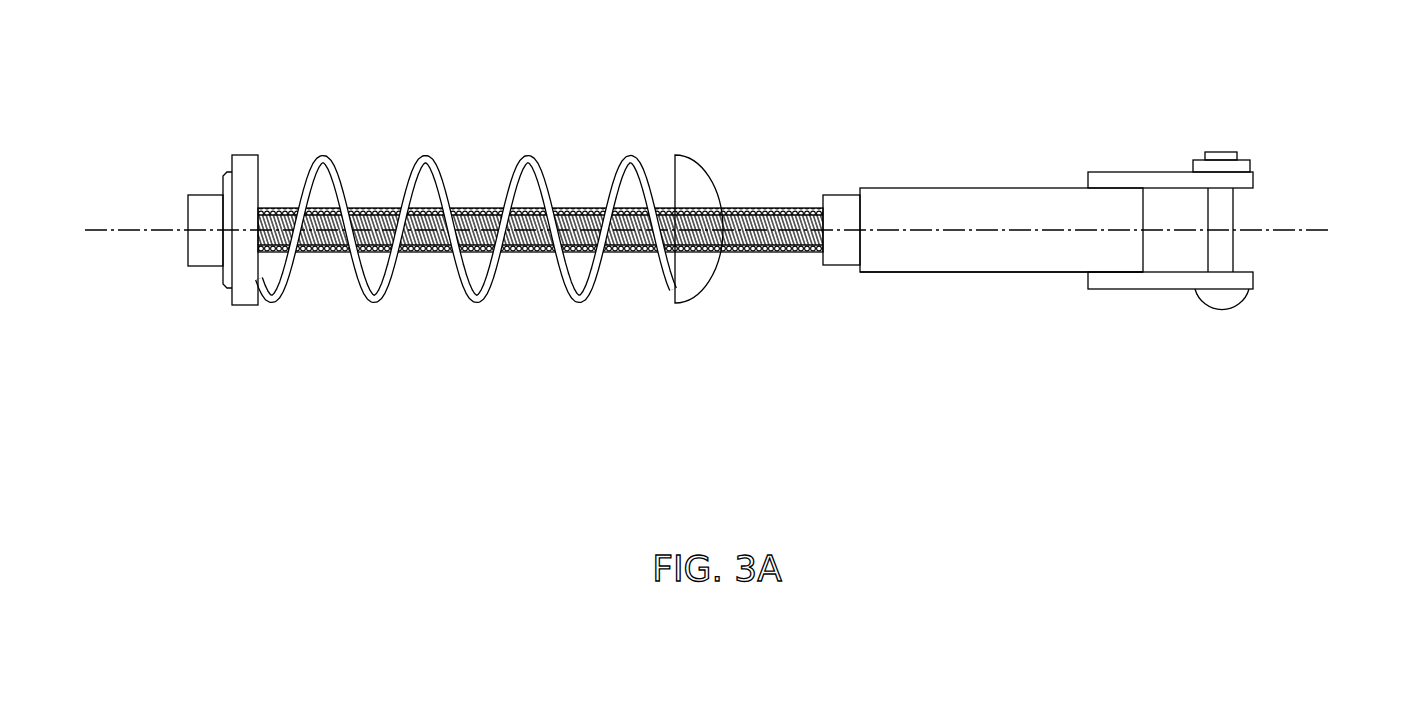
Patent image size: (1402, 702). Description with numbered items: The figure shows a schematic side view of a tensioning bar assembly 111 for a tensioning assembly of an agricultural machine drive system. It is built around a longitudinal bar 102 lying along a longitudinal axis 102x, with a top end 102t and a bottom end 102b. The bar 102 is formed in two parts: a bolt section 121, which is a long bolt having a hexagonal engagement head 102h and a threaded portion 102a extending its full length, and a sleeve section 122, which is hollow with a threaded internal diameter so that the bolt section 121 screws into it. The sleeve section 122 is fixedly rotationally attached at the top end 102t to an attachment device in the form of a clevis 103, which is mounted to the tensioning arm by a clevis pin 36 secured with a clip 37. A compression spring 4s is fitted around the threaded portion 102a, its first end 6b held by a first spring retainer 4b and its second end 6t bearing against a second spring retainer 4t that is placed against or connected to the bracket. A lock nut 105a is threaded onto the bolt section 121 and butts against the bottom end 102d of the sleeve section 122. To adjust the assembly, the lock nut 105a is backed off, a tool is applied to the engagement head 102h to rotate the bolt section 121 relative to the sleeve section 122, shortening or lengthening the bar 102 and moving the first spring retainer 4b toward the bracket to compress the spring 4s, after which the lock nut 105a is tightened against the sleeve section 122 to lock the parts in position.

The longitudinal axis 102x is at (701, 230).
The engagement head 102h is at (183, 233).
The bottom end 102b is at (226, 288).
The first spring retainer 4b is at (248, 165).
The first end of the spring 6b is at (262, 292).
The compression spring 4s is at (466, 216).
The bolt section 121 is at (533, 237).
The second spring retainer 4t is at (698, 165).
The second end of the spring 6t is at (663, 293).
The threaded portion 102a is at (770, 207).
The lock nut 105a is at (838, 207).
The bottom end of the sleeve portion 102d is at (995, 247).
The sleeve section 122 is at (903, 245).
The top end 102t is at (1013, 272).
The clevis 103 is at (1175, 246).
The clip 37 is at (1250, 167).
The clevis pin 36 is at (1228, 247).
The longitudinal bar 102 is at (708, 225).
The tensioning bar assembly 111 is at (701, 299).